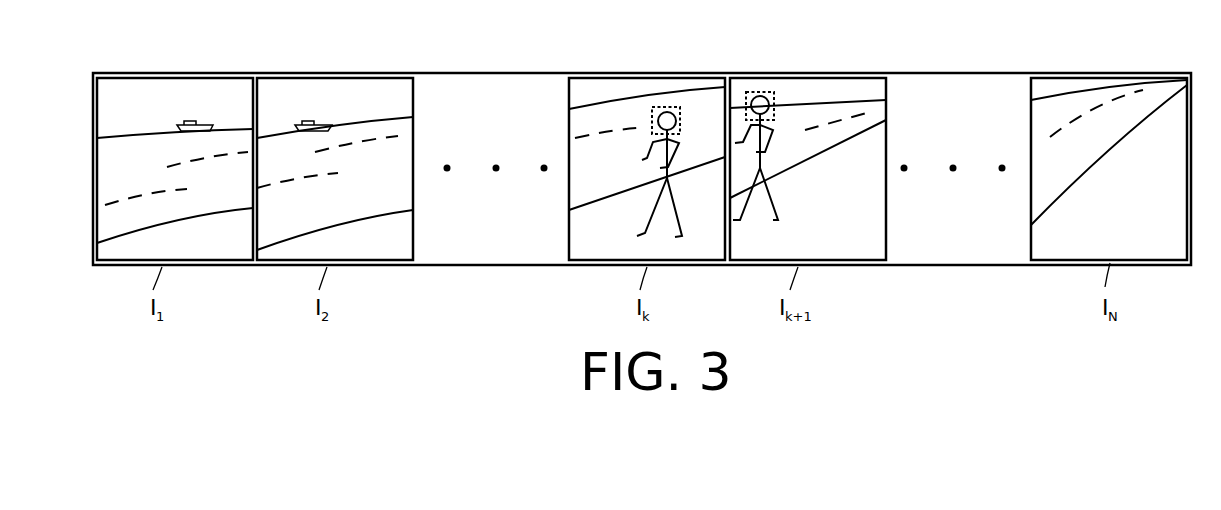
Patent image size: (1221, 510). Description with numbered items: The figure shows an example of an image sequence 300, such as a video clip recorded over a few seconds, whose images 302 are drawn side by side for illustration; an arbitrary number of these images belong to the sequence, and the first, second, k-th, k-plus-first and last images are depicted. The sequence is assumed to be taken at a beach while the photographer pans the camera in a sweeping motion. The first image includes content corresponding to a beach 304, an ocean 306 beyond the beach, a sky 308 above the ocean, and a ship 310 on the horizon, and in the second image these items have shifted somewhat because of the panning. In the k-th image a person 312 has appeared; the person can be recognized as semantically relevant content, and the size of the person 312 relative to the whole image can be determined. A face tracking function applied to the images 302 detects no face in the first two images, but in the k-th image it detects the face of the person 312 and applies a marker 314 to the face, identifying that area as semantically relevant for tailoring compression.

The image sequence 300 is at (487, 73).
The images 302 is at (424, 220).
The beach 304 is at (225, 253).
The ocean 306 is at (150, 172).
The sky 308 is at (139, 113).
The ship 310 is at (203, 122).
The person 312 is at (655, 218).
The marker 314 is at (680, 123).